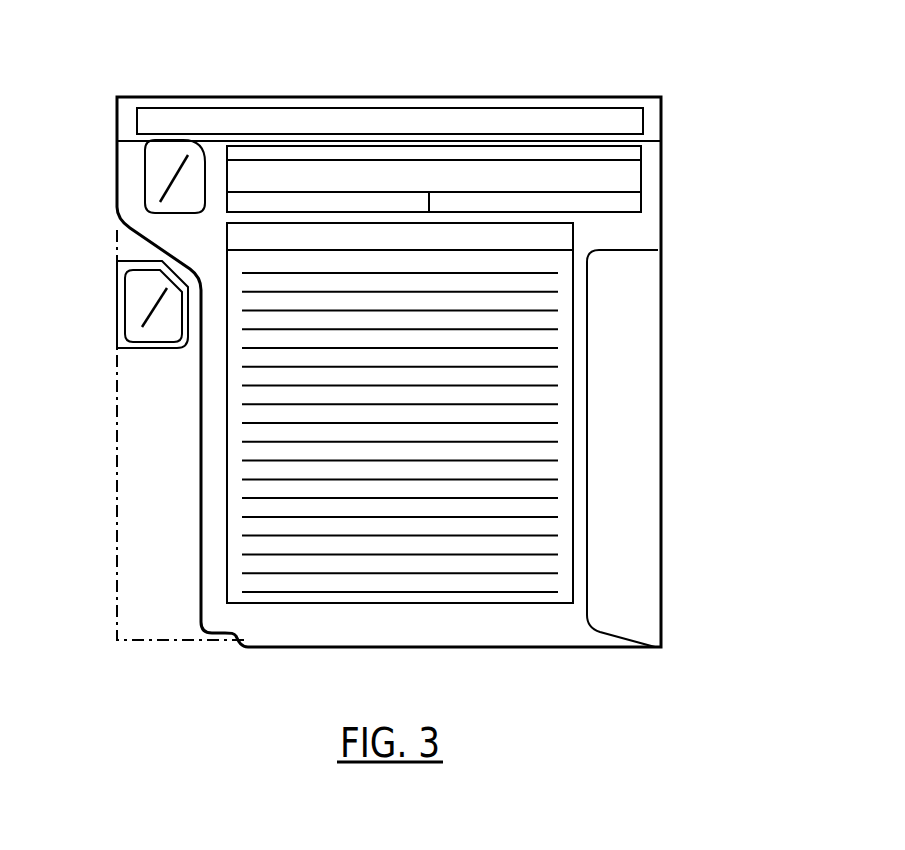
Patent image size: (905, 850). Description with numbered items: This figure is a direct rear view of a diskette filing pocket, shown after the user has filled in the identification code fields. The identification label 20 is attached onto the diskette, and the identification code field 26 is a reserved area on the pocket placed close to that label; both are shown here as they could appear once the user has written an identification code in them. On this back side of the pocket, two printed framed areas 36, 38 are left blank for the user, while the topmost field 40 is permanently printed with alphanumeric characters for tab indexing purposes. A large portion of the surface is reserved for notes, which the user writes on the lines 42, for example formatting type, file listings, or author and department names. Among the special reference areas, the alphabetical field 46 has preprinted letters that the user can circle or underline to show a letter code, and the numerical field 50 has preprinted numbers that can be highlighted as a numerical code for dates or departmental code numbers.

The identification label 20 is at (125, 313).
The identification code field 26 is at (147, 182).
The printed framed area 36 is at (641, 158).
The printed framed area 38 is at (553, 236).
The topmost field 40 is at (573, 110).
The lines 42 is at (543, 278).
The alphabetical field 46 is at (641, 183).
The numerical field 50 is at (661, 213).